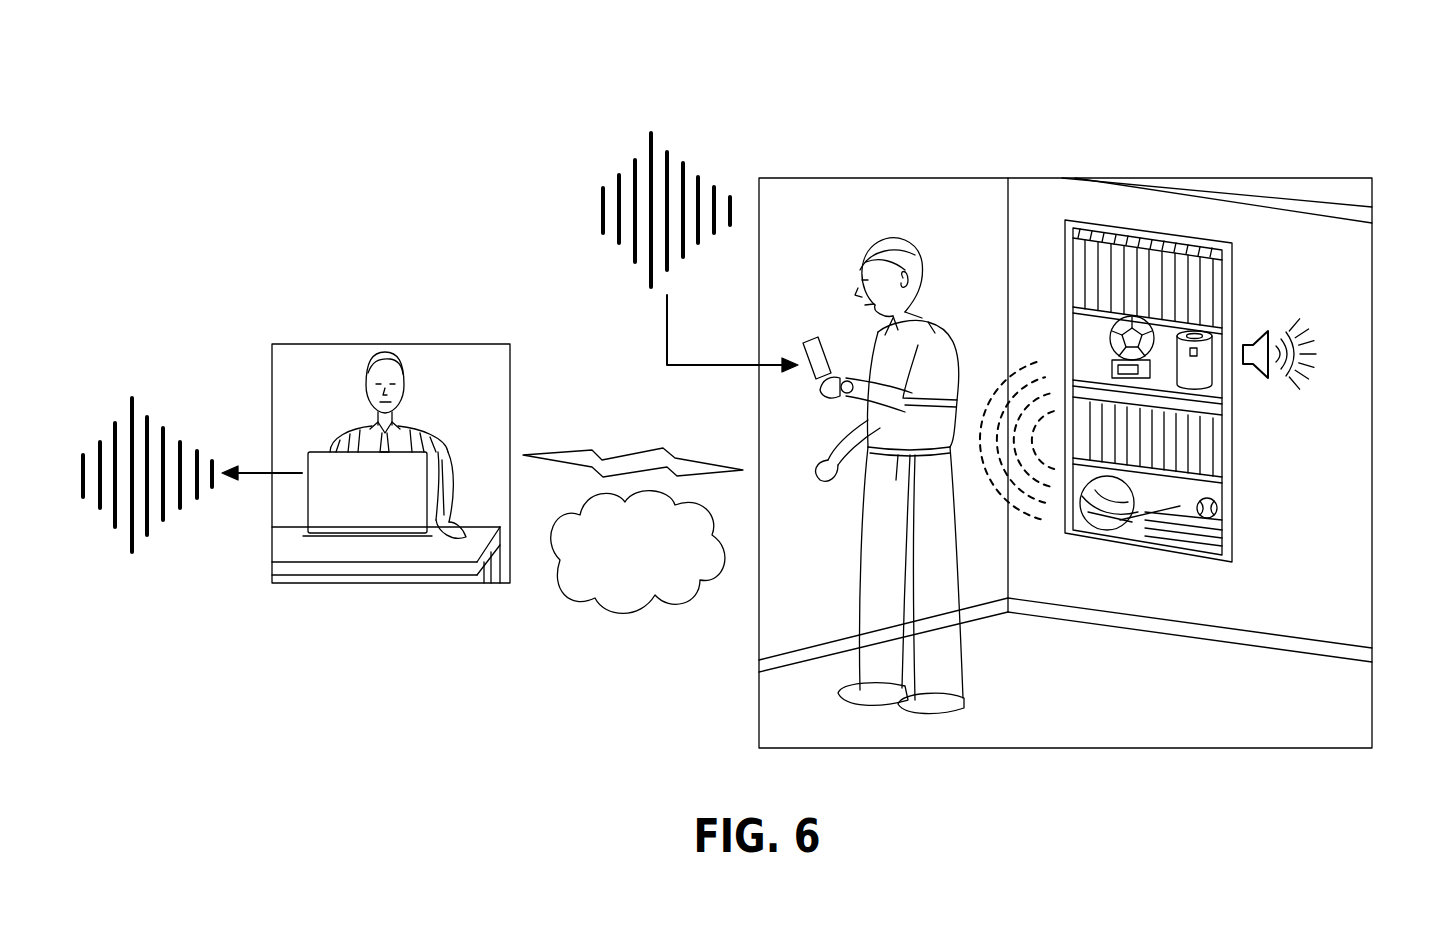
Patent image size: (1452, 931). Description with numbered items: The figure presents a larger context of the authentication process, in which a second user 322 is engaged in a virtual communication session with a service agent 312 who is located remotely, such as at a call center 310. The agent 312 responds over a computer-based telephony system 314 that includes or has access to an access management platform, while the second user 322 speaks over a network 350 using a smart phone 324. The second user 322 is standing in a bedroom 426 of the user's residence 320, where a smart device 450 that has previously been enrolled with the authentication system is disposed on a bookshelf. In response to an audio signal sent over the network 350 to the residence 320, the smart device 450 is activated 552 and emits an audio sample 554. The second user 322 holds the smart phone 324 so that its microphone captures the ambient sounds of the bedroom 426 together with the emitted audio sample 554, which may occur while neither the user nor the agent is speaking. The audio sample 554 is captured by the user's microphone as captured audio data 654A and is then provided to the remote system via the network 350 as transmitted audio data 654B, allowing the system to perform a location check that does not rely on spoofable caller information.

The call center 310 is at (322, 360).
The service agent 312 is at (420, 358).
The computer-based telephony system 314 is at (352, 506).
The user's residence 320 is at (1283, 238).
The second user 322 is at (907, 218).
The smart phone 324 is at (820, 342).
The network 350 is at (637, 452).
The bedroom 426 is at (1245, 724).
The smart device 450 is at (1232, 392).
The activation of the smart device 552 is at (1341, 343).
The audio sample 554 is at (1046, 539).
The captured audio data 654A is at (613, 135).
The transmitted audio data 654B is at (174, 397).